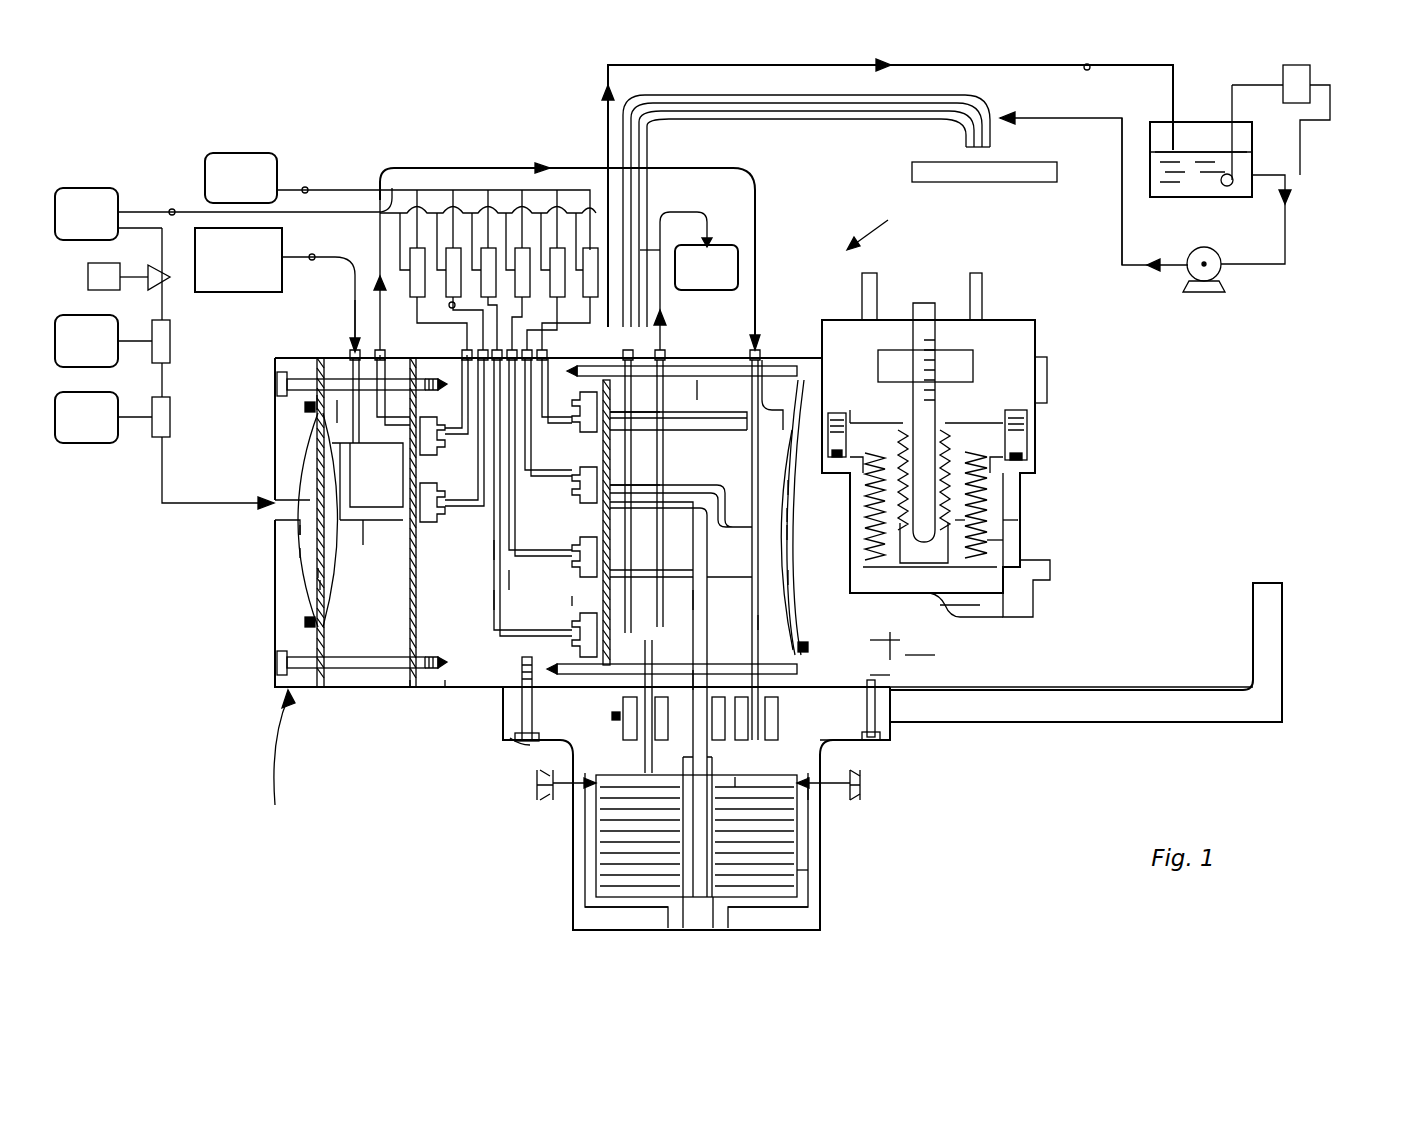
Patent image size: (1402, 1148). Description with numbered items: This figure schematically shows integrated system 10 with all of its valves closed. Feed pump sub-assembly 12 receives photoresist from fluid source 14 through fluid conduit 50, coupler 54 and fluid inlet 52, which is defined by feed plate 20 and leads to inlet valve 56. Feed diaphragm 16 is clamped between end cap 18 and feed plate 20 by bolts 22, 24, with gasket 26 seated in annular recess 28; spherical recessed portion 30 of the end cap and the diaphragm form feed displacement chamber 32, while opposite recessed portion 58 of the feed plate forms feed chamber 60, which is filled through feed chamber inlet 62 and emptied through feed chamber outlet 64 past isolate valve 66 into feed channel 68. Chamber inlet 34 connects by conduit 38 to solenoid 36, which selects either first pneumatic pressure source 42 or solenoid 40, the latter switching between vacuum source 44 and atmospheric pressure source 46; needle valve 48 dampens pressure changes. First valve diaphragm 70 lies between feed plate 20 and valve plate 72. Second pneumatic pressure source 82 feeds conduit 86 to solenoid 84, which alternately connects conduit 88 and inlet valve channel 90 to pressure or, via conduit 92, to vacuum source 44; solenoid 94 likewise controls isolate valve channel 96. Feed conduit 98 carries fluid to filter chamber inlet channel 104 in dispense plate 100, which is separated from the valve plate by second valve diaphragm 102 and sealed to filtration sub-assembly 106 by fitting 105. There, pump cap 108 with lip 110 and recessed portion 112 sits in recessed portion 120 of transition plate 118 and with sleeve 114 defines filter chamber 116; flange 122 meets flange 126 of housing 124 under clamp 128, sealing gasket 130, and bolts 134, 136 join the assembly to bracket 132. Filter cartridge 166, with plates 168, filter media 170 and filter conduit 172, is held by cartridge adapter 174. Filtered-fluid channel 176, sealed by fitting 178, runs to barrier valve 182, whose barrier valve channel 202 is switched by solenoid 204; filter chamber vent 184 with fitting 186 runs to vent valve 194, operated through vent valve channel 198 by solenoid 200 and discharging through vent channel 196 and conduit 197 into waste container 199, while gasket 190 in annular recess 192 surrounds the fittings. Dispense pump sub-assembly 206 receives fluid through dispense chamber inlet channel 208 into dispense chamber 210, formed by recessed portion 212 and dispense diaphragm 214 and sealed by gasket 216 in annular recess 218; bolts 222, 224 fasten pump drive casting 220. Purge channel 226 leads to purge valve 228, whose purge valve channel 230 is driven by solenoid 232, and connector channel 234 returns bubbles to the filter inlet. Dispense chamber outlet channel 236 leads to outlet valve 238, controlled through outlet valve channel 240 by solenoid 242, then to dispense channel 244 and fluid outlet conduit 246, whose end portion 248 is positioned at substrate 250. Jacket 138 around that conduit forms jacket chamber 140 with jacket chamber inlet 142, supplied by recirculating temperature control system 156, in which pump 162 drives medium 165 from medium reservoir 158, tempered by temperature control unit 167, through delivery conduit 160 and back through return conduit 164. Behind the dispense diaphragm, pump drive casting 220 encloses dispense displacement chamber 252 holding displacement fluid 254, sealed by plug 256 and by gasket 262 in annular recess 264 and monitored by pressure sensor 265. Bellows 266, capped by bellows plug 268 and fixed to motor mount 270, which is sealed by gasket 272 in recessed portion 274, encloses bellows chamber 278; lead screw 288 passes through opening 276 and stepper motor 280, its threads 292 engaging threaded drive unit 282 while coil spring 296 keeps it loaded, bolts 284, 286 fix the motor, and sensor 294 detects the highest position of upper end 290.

The integrated system 10 is at (1098, 778).
The feed pump sub-assembly 12 is at (341, 589).
The fluid source 14 is at (226, 273).
The feed diaphragm 16 is at (320, 572).
The end cap 18 is at (278, 642).
The feed plate 20 is at (343, 690).
The bolt 22 is at (275, 668).
The bolt 24 is at (277, 376).
The gasket 26 is at (305, 622).
The annular recess 28 is at (318, 400).
The recessed portion 30 is at (300, 553).
The feed displacement chamber 32 is at (300, 530).
The chamber inlet 34 is at (288, 498).
The solenoid 36 is at (170, 410).
The conduit 38 is at (180, 503).
The solenoid 40 is at (170, 342).
The first pneumatic pressure source 42 is at (73, 432).
The vacuum source 44 is at (73, 228).
The atmospheric pressure source 46 is at (73, 356).
The needle valve 48 is at (88, 272).
The fluid conduit 50 is at (312, 254).
The fluid inlet 52 is at (338, 400).
The coupler 54 is at (355, 335).
The inlet valve 56 is at (365, 522).
The recessed portion 58 is at (320, 585).
The feed chamber 60 is at (332, 468).
The feed chamber inlet 62 is at (355, 535).
The feed chamber outlet 64 is at (338, 430).
The isolate valve 66 is at (467, 358).
The feed channel 68 is at (386, 358).
The first valve diaphragm 70 is at (412, 682).
The valve plate 72 is at (452, 676).
The second pneumatic pressure source 82 is at (292, 178).
The solenoid 84 is at (400, 186).
The conduit 86 is at (305, 187).
The conduit 88 is at (449, 305).
The inlet valve channel 90 is at (447, 510).
The conduit 92 is at (172, 209).
The solenoid 94 is at (405, 272).
The isolate valve channel 96 is at (446, 450).
The feed conduit 98 is at (392, 190).
The dispense plate 100 is at (800, 345).
The second valve diaphragm 102 is at (509, 586).
The filter chamber inlet channel 104 is at (768, 355).
The fitting 105 is at (880, 676).
The filtration sub-assembly 106 is at (885, 848).
The pump cap 108 is at (860, 768).
The lip 110 is at (870, 744).
The recessed portion 112 is at (738, 782).
The sleeve 114 is at (574, 862).
The filter chamber 116 is at (575, 775).
The transition plate 118 is at (500, 737).
The recessed portion 120 is at (512, 740).
The flange 122 is at (537, 782).
The housing 124 is at (565, 845).
The flange 126 is at (862, 795).
The clamp 128 is at (540, 795).
The gasket 130 is at (810, 788).
The bracket 132 is at (1282, 647).
The bolt 134 is at (880, 722).
The bolt 136 is at (510, 708).
The jacket 138 is at (808, 112).
The jacket chamber 140 is at (850, 120).
The jacket chamber inlet 142 is at (992, 116).
The recirculating temperature control system 156 is at (1145, 270).
The medium reservoir 158 is at (1182, 196).
The delivery conduit 160 is at (1282, 232).
The pump 162 is at (1207, 285).
The return conduit 164 is at (1090, 71).
The medium 165 is at (1165, 190).
The filter cartridge 166 is at (800, 897).
The temperature control unit 167 is at (1278, 125).
The plates 168 is at (800, 870).
The filter media 170 is at (620, 890).
The filter conduit 172 is at (702, 866).
The cartridge adapter 174 is at (670, 830).
The filtered-fluid channel 176 is at (700, 602).
The fitting 178 is at (700, 680).
The barrier valve 182 is at (572, 482).
The filter chamber vent 184 is at (572, 632).
The fitting 186 is at (620, 706).
The gasket 190 is at (618, 722).
The annular recess 192 is at (950, 684).
The vent valve 194 is at (545, 669).
The vent channel 196 is at (664, 340).
The conduit 197 is at (695, 213).
The vent valve channel 198 is at (494, 598).
The waste container 199 is at (725, 282).
The solenoid 200 is at (451, 246).
The barrier valve channel 202 is at (573, 490).
The solenoid 204 is at (577, 246).
The dispense pump sub-assembly 206 is at (892, 224).
The dispense chamber inlet channel 208 is at (790, 532).
The dispense chamber 210 is at (790, 515).
The recessed portion 212 is at (792, 487).
The dispense diaphragm 214 is at (792, 578).
The gasket 216 is at (880, 640).
The annular recess 218 is at (752, 622).
The pump drive casting 220 is at (1033, 612).
The bolt 222 is at (895, 634).
The bolt 224 is at (800, 365).
The purge channel 226 is at (686, 412).
The purge valve 228 is at (660, 442).
The purge valve channel 230 is at (576, 364).
The solenoid 232 is at (620, 248).
The connector channel 234 is at (697, 380).
The dispense chamber outlet channel 236 is at (803, 642).
The outlet valve 238 is at (575, 552).
The outlet valve channel 240 is at (494, 558).
The solenoid 242 is at (521, 246).
The dispense channel 244 is at (572, 601).
The fluid outlet conduit 246 is at (733, 103).
The end portion 248 is at (975, 148).
The substrate 250 is at (1000, 182).
The dispense displacement chamber 252 is at (965, 622).
The displacement fluid 254 is at (1010, 525).
The plug 256 is at (905, 655).
The gasket 262 is at (840, 440).
The annular recess 264 is at (836, 412).
The pressure sensor 265 is at (1050, 570).
The bellows 266 is at (990, 500).
The bellows plug 268 is at (1003, 548).
The motor mount 270 is at (1028, 440).
The gasket 272 is at (1028, 458).
The recessed portion 274 is at (1028, 472).
The opening 276 is at (947, 428).
The bellows chamber 278 is at (960, 500).
The stepper motor 280 is at (1050, 336).
The threaded drive unit 282 is at (988, 336).
The bolt 284 is at (1047, 400).
The bolt 286 is at (878, 352).
The lead screw 288 is at (915, 552).
The upper end 290 is at (927, 303).
The threads 292 is at (975, 364).
The sensor 294 is at (984, 285).
The coil spring 296 is at (960, 526).